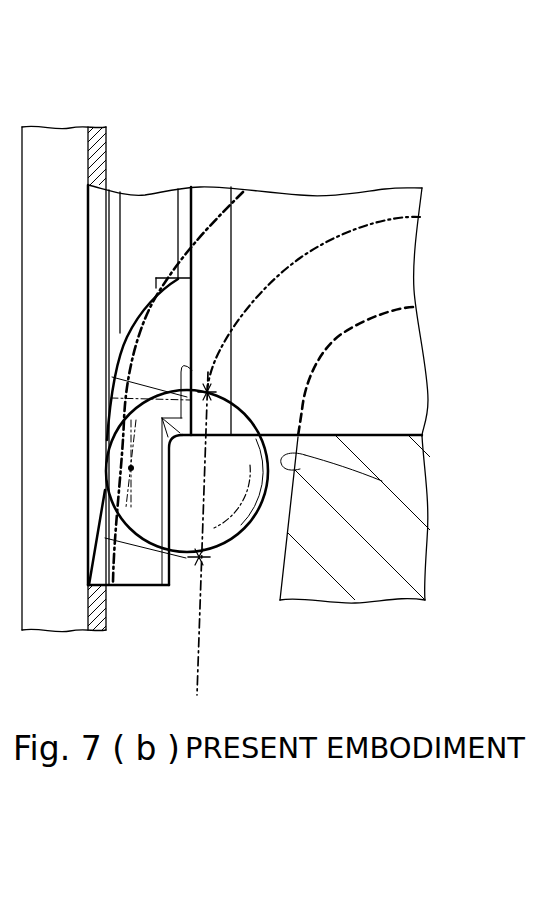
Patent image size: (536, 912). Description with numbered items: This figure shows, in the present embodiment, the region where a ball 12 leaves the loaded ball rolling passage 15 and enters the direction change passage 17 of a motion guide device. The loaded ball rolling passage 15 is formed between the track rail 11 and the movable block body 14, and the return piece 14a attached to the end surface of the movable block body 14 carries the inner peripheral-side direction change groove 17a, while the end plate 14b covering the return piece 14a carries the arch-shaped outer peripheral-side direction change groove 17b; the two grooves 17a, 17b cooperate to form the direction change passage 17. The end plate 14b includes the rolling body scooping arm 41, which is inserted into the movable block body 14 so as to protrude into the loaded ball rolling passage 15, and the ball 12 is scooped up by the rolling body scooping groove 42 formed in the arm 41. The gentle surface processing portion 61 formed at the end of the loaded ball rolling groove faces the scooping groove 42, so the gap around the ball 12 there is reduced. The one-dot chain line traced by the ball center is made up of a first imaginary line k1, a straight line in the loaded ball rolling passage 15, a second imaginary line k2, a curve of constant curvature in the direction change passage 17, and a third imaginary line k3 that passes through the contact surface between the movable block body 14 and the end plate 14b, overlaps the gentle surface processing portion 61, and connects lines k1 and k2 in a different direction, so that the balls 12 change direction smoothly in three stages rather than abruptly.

The track rail 11 is at (63, 147).
The ball 12 is at (231, 546).
The movable block body 14 is at (388, 535).
The return piece 14a is at (377, 384).
The end plate 14b is at (144, 222).
The loaded ball rolling passage 15 is at (263, 537).
The direction change passage 17 is at (365, 263).
The inner peripheral-side direction change groove 17a is at (385, 298).
The outer peripheral-side direction change groove 17b is at (218, 245).
The rolling body scooping arm 41 is at (133, 583).
The rolling body scooping groove 42 is at (143, 583).
The gentle surface processing portion 61 is at (393, 480).
The first imaginary line k1 is at (200, 655).
The second imaginary line k2 is at (260, 288).
The third imaginary line k3 is at (205, 490).